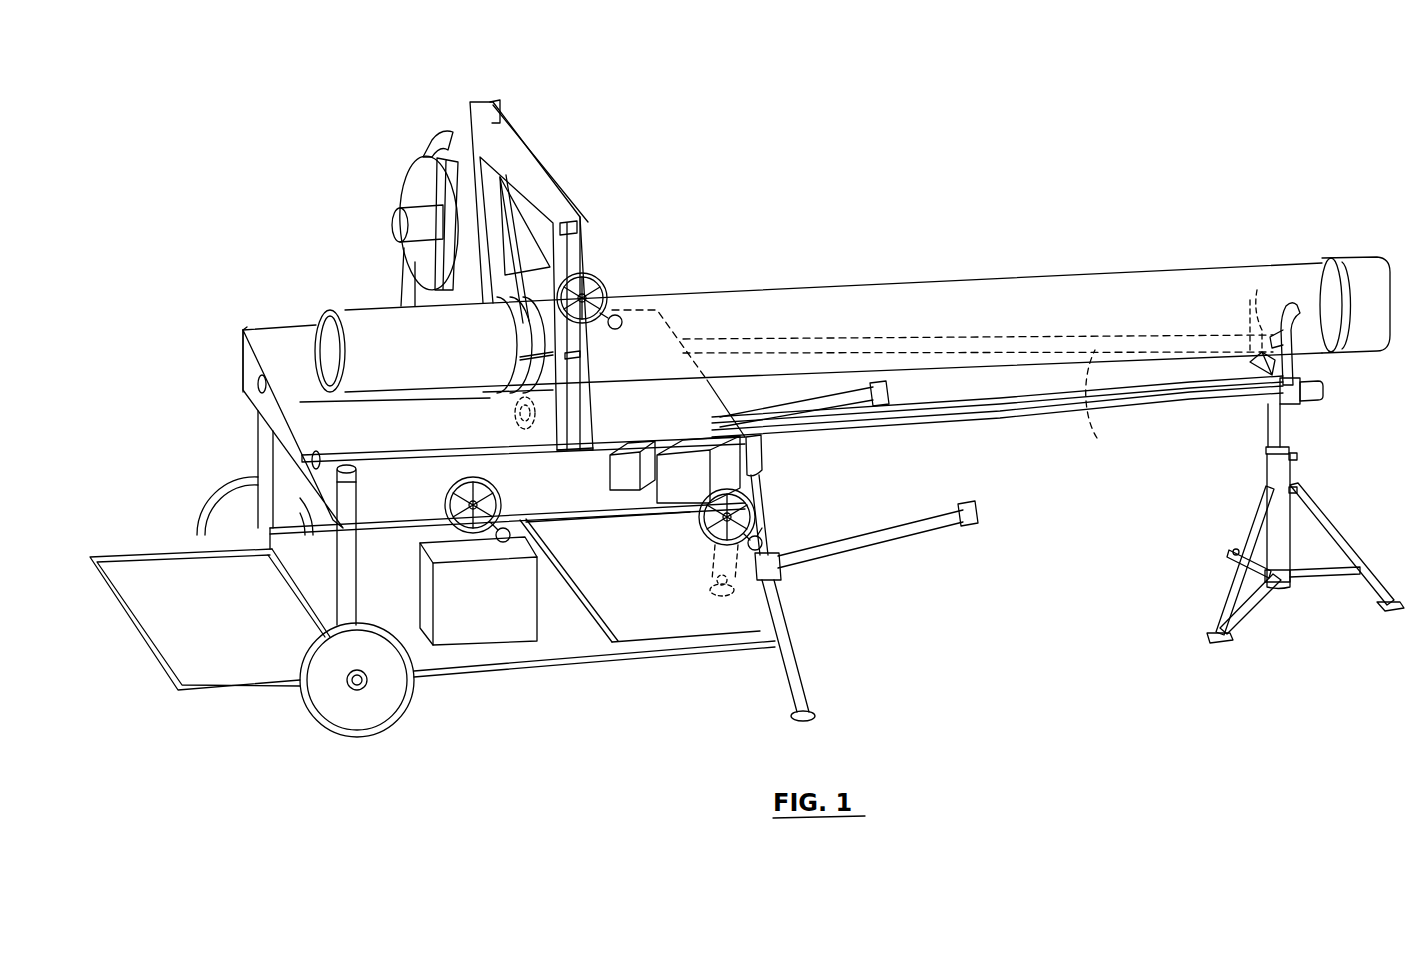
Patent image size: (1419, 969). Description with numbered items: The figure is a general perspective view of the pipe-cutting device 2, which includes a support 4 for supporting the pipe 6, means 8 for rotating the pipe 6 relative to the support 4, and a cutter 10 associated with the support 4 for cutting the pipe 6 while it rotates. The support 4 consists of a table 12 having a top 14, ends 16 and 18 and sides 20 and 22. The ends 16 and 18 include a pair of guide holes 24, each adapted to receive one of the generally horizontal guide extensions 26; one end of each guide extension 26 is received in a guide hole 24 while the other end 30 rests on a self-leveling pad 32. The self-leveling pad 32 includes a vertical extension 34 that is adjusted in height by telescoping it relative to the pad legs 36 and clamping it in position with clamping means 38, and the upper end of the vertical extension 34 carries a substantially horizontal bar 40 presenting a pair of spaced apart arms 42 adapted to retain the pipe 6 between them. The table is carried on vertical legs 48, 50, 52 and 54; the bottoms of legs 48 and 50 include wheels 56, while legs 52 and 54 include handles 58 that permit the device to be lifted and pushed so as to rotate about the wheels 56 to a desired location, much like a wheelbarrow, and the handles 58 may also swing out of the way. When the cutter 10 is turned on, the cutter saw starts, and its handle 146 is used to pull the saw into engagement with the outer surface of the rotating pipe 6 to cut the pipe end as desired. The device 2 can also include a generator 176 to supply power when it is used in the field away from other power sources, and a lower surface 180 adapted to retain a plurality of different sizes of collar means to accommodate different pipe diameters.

The pipe-cutting device 2 is at (588, 285).
The support 4 is at (236, 314).
The pipe 6 is at (777, 302).
The means for rotating the pipe 8 is at (580, 165).
The cutter 10 is at (393, 187).
The table 12 is at (198, 377).
The top 14 is at (468, 438).
The end 16 is at (273, 413).
The end 18 is at (727, 415).
The side 20 is at (258, 318).
The side 22 is at (378, 505).
The guide holes 24 is at (256, 382).
The guide extensions 26 is at (1020, 407).
The end of guide extension 30 is at (1335, 390).
The self-leveling pad 32 is at (1232, 369).
The vertical extension 34 is at (1268, 430).
The pad legs 36 is at (1357, 558).
The clamping means 38 is at (1298, 457).
The horizontal bar 40 is at (1268, 398).
The arms 42 is at (1260, 305).
The vertical leg 48 is at (258, 462).
The vertical leg 50 is at (345, 590).
The vertical leg 52 is at (795, 620).
The vertical leg 54 is at (762, 532).
The wheels 56 is at (207, 490).
The handles 58 is at (860, 403).
The handle 146 is at (440, 128).
The generator 176 is at (490, 635).
The lower surface 180 is at (697, 625).